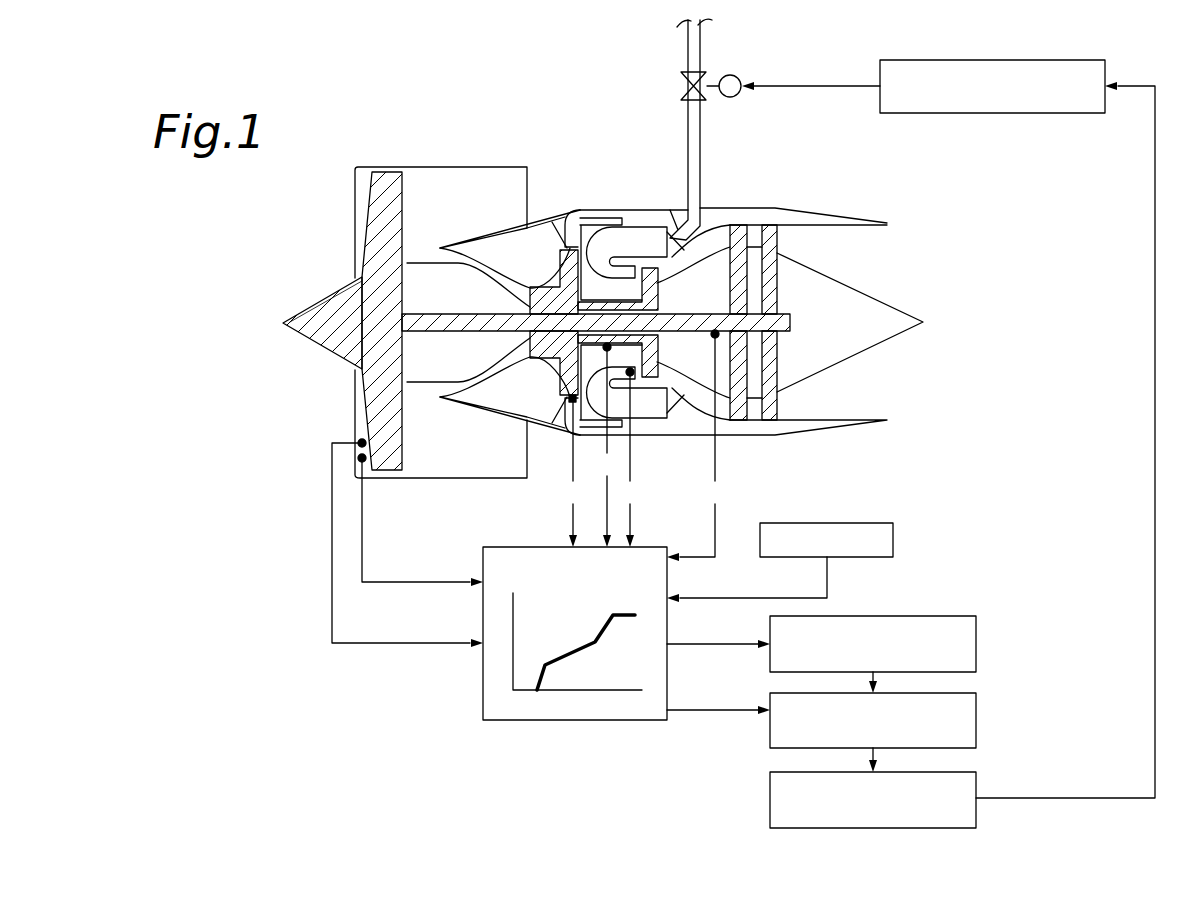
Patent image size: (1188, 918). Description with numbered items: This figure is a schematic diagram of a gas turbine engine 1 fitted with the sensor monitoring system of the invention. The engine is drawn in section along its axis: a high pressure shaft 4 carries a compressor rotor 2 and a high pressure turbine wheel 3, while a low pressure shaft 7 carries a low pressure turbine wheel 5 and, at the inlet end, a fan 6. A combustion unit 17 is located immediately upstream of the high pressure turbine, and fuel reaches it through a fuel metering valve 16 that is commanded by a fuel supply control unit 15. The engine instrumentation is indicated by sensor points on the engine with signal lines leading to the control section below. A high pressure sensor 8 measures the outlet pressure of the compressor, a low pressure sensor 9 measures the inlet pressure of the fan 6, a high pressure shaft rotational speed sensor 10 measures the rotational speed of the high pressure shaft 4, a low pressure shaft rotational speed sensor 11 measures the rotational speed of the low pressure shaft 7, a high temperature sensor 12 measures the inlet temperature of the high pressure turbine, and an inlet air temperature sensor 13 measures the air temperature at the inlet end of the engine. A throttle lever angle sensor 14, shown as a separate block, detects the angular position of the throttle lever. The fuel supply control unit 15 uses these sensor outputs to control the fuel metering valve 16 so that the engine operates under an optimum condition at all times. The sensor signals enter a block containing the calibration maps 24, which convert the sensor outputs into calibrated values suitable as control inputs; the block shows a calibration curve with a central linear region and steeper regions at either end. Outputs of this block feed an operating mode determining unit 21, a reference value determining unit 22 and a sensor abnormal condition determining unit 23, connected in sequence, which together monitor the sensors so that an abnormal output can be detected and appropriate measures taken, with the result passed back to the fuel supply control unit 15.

The gas turbine engine 1 is at (400, 127).
The compressor rotor 2 is at (563, 267).
The high pressure turbine wheel 3 is at (648, 270).
The high pressure shaft 4 is at (610, 300).
The low pressure turbine wheel 5 is at (767, 225).
The fan 6 is at (360, 242).
The low pressure shaft 7 is at (473, 308).
The high pressure sensor 8 is at (571, 403).
The low pressure sensor 9 is at (368, 460).
The high pressure shaft rotational speed sensor 10 is at (604, 349).
The low pressure shaft rotational speed sensor 11 is at (715, 334).
The high temperature sensor 12 is at (632, 374).
The inlet air temperature sensor 13 is at (360, 440).
The throttle lever angle sensor 14 is at (862, 522).
The fuel supply control unit 15 is at (1066, 60).
The fuel metering valve 16 is at (687, 78).
The combustion unit 17 is at (638, 222).
The operating mode determining unit 21 is at (977, 656).
The reference value determining unit 22 is at (977, 712).
The sensor abnormal condition determining unit 23 is at (957, 828).
The calibration maps 24 is at (507, 721).